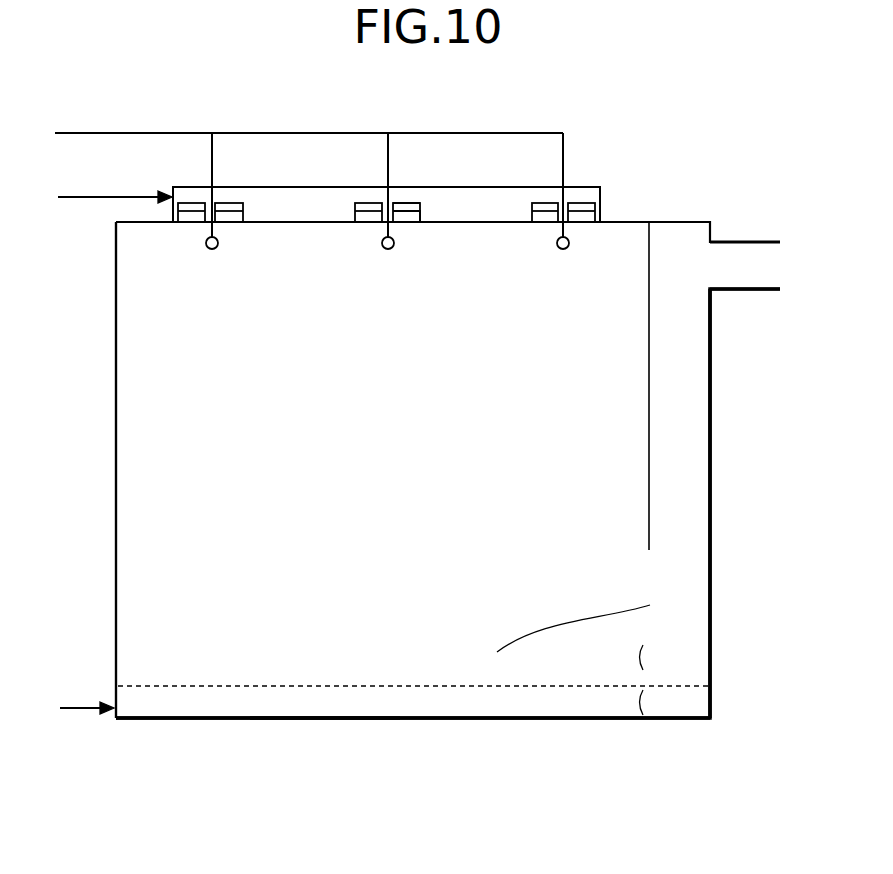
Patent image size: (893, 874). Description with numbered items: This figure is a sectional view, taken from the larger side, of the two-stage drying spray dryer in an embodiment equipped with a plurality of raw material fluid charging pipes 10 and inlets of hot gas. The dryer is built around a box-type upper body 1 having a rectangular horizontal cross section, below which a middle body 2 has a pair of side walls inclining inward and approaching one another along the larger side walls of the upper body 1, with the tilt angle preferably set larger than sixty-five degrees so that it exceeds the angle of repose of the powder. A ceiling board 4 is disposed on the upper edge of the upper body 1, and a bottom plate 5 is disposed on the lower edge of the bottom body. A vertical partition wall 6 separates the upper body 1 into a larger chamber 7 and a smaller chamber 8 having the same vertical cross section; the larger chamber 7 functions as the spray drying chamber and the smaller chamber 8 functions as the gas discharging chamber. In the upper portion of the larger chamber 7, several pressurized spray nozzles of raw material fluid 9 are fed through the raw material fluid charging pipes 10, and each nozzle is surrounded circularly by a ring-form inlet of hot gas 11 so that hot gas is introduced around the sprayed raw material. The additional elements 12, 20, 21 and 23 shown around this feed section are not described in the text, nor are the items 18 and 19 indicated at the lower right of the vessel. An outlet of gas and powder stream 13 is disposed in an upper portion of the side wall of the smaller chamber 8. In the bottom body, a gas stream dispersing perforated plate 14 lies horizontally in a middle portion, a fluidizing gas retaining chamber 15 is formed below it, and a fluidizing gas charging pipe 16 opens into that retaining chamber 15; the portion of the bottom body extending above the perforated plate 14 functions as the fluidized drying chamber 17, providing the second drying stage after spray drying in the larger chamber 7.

The upper body 1 is at (114, 458).
The middle body 2 is at (114, 587).
The ceiling board 4 is at (148, 224).
The bottom plate 5 is at (411, 720).
The vertical partition wall 6 is at (650, 471).
The larger chamber 7 is at (175, 370).
The smaller chamber 8 is at (690, 402).
The pressurized spray nozzle of raw material fluid 9 is at (212, 250).
The raw material fluid charging pipe 10 is at (210, 170).
The ring-form inlet of hot gas 11 is at (355, 221).
The gas inlet 12 is at (107, 197).
The outlet of gas and powder stream 13 is at (745, 242).
The gas stream dispersing perforated plate 14 is at (228, 687).
The fluidizing gas retaining chamber 15 is at (318, 700).
The fluidizing gas charging pipe 16 is at (78, 712).
The fluidized drying chamber 17 is at (650, 605).
The upper region 18 is at (643, 656).
The lower region 19 is at (643, 700).
The lower holder part 20 is at (418, 218).
The upper holder part 21 is at (408, 203).
The manifold housing 23 is at (600, 192).